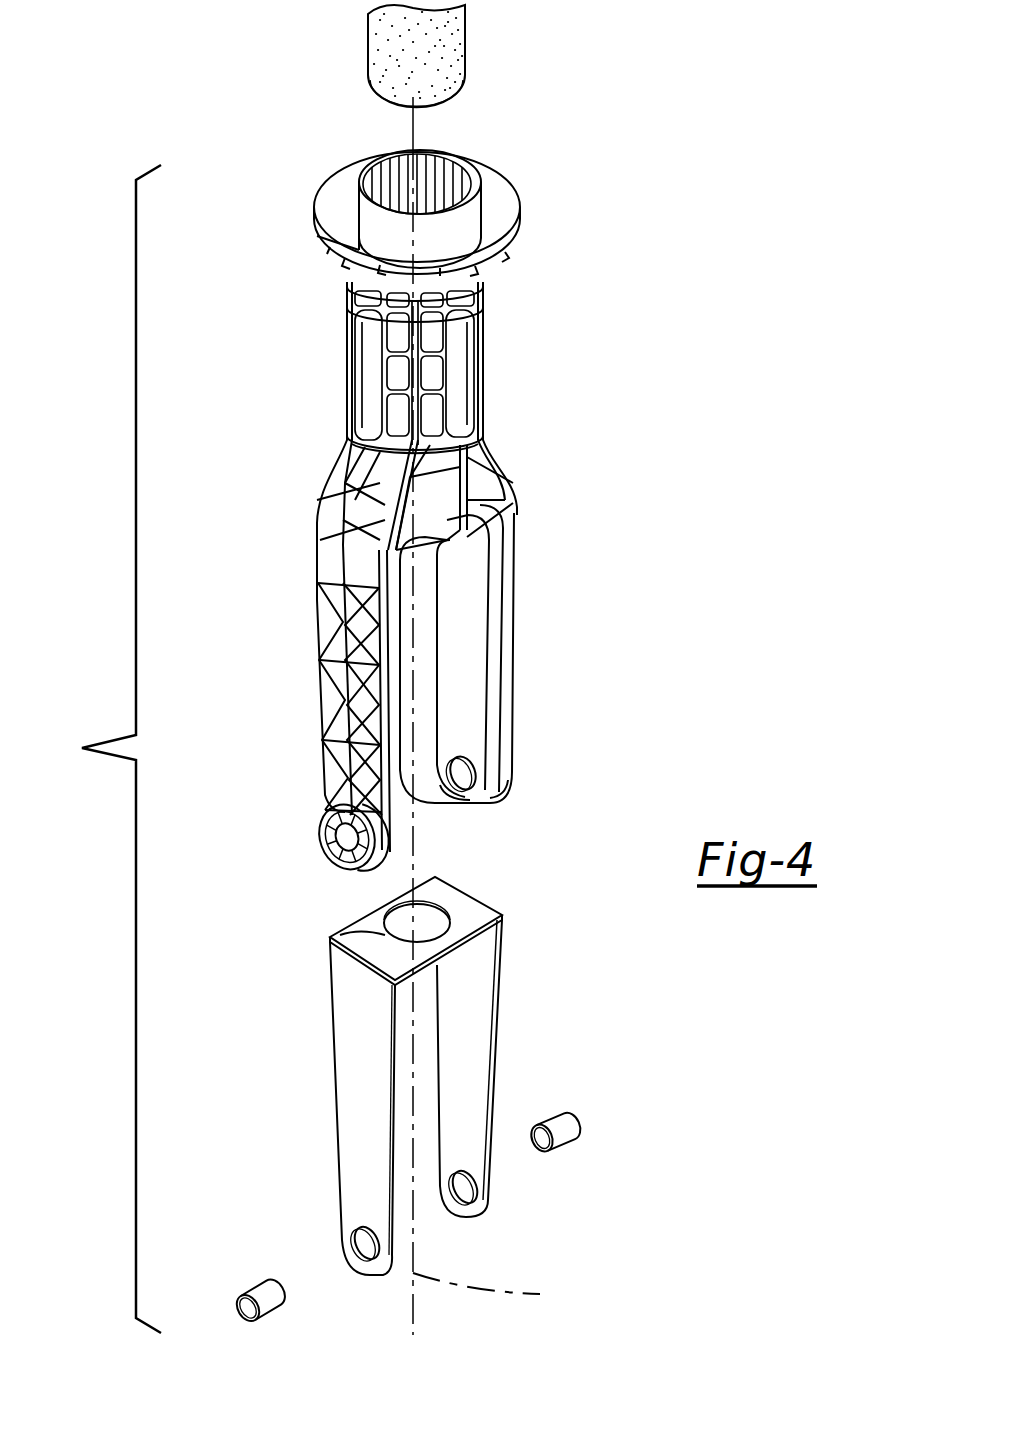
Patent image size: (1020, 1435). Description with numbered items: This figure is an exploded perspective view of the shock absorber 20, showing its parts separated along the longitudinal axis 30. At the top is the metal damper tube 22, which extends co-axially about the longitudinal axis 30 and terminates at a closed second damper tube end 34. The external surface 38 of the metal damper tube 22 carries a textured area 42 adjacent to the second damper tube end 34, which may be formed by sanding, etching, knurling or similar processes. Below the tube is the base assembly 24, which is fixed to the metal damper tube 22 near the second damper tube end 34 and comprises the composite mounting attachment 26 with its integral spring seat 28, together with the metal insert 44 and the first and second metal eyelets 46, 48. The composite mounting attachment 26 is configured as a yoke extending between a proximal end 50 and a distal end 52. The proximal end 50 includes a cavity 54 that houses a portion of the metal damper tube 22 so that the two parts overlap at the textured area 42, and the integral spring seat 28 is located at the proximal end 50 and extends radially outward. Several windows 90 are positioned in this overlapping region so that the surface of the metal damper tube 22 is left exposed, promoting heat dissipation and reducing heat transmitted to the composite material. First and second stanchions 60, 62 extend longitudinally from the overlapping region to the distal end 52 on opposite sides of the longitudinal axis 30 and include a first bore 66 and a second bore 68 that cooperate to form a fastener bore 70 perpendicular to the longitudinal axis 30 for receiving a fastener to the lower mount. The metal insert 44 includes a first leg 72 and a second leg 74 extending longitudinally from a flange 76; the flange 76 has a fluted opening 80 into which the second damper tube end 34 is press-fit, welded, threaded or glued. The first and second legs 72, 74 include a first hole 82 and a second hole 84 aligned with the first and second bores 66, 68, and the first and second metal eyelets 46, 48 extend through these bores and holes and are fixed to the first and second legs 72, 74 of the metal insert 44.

The shock absorber 20 is at (176, 114).
The metal damper tube 22 is at (364, 26).
The base assembly 24 is at (106, 749).
The composite mounting attachment 26 is at (302, 512).
The integral spring seat 28 is at (348, 265).
The longitudinal axis 30 is at (502, 1292).
The second damper tube end 34 is at (465, 99).
The external surface 38 is at (390, 74).
The textured area 42 is at (456, 47).
The metal insert 44 is at (324, 1059).
The first metal eyelet 46 is at (560, 1122).
The second metal eyelet 48 is at (264, 1294).
The proximal end 50 is at (464, 213).
The distal end 52 is at (510, 802).
The cavity 54 is at (380, 180).
The first stanchion 60 is at (466, 602).
The second stanchion 62 is at (318, 647).
The first bore 66 is at (468, 777).
The second bore 68 is at (352, 836).
The fastener bore 70 is at (545, 1147).
The first leg 72 is at (476, 1013).
The second leg 74 is at (360, 1142).
The flange 76 is at (378, 938).
The fluted opening 80 is at (438, 923).
The first hole 82 is at (464, 1191).
The second hole 84 is at (366, 1247).
The windows 90 is at (356, 366).